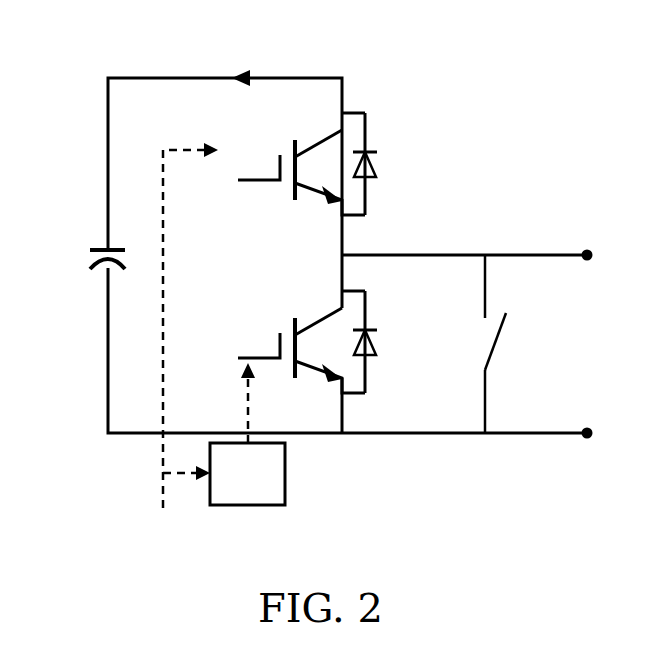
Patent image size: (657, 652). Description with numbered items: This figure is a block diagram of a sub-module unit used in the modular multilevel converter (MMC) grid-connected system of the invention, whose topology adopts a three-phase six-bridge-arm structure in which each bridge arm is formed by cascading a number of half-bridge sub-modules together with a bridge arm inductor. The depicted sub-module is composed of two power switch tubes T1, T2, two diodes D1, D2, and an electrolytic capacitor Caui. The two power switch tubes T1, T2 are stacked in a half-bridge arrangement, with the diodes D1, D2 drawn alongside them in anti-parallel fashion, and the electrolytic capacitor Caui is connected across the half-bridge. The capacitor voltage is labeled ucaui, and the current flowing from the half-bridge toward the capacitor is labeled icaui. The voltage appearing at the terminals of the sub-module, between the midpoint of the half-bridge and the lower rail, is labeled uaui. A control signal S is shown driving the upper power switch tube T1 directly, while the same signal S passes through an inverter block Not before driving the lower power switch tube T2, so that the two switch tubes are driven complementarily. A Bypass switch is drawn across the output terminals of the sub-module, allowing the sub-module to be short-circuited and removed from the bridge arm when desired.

The power switch tube T1 is at (296, 164).
The power switch tube T2 is at (296, 342).
The diode D1 is at (403, 164).
The diode D2 is at (401, 342).
The electrolytic capacitor Caui is at (73, 216).
The capacitor voltage ucaui is at (53, 280).
The capacitor current icaui is at (243, 53).
The submodule output voltage uaui is at (580, 344).
The switching control signal S is at (184, 354).
The inverter (NOT gate) Not is at (247, 434).
The bypass switch Bypass is at (488, 375).